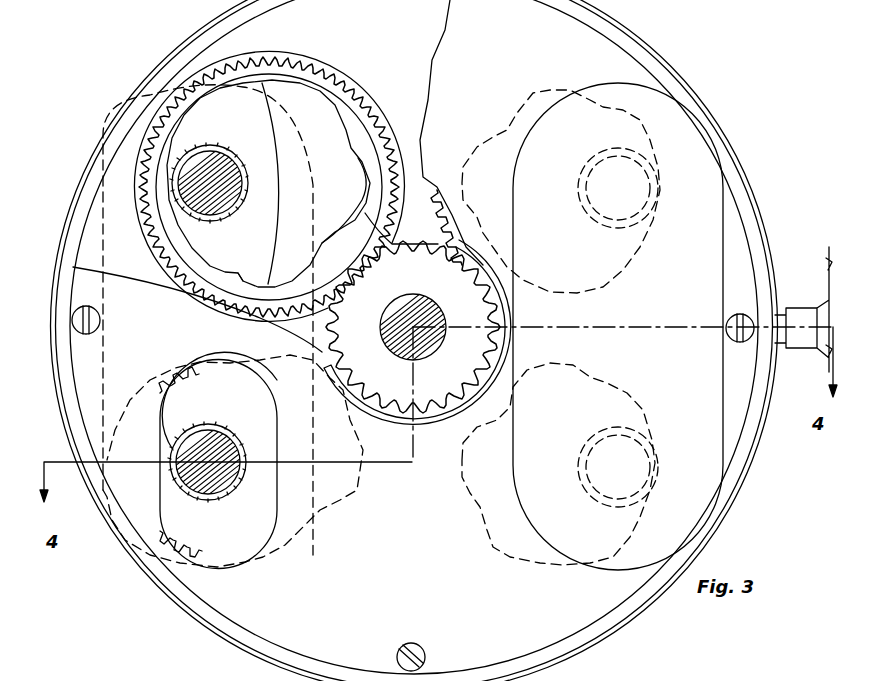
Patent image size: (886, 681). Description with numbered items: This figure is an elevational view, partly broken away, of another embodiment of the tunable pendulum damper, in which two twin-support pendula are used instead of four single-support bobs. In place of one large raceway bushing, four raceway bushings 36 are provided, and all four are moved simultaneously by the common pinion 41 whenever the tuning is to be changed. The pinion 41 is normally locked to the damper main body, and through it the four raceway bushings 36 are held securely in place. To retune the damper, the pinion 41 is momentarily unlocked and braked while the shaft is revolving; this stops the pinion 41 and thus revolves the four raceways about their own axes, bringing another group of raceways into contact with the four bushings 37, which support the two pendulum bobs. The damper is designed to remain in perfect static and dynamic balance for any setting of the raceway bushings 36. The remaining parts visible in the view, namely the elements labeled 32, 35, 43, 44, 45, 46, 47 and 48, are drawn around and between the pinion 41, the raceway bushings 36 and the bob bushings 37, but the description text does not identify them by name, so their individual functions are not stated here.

The shaft 32 is at (672, 137).
The screw 35 is at (99, 321).
The raceway bushing 36 is at (275, 302).
The bushing 37 is at (175, 180).
The pinion 41 is at (439, 409).
The gear cover 43 is at (462, 236).
The lobe 44 is at (353, 155).
The ring gear 45 is at (283, 85).
The rotor 46 is at (192, 120).
The notch 47 is at (241, 275).
The lower rotor 48 is at (160, 413).